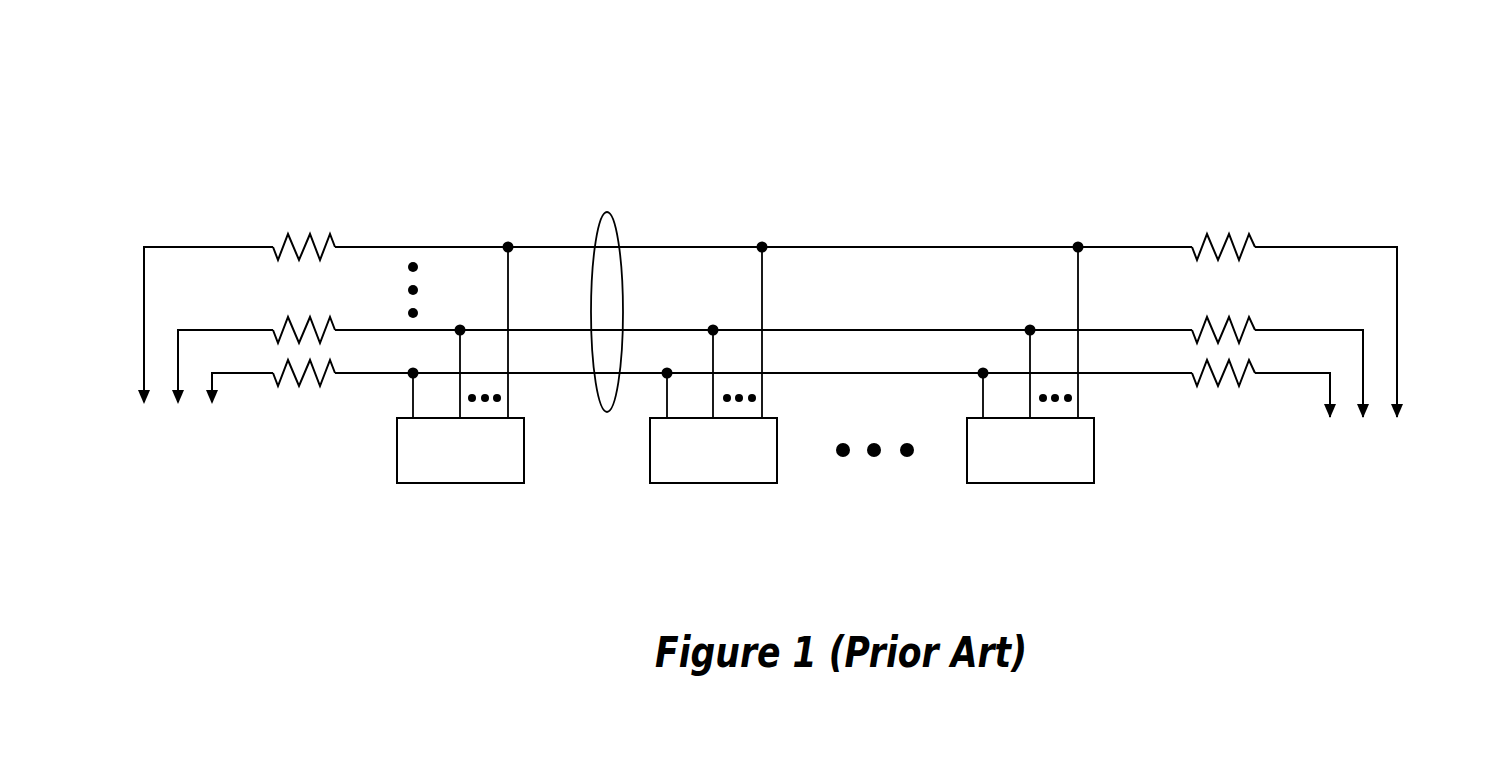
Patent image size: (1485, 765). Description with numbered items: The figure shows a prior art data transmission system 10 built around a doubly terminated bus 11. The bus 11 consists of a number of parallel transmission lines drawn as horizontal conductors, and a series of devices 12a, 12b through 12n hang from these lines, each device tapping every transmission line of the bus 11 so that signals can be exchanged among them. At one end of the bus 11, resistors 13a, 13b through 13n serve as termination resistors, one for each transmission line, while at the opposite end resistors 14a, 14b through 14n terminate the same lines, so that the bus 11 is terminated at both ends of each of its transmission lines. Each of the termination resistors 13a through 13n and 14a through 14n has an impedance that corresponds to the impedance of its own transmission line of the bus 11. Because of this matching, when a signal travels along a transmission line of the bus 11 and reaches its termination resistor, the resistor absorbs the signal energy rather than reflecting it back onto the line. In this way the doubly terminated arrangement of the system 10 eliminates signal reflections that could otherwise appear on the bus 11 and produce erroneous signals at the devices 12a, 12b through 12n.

The data transmission system 10 is at (1401, 108).
The bus 11 is at (607, 212).
The device 12a is at (515, 417).
The device 12b is at (768, 417).
The device 12n is at (1082, 417).
The termination resistor 13a is at (1222, 390).
The termination resistor 13b is at (1222, 310).
The termination resistor 13n is at (1222, 227).
The termination resistor 14a is at (302, 392).
The termination resistor 14b is at (302, 310).
The termination resistor 14n is at (302, 228).